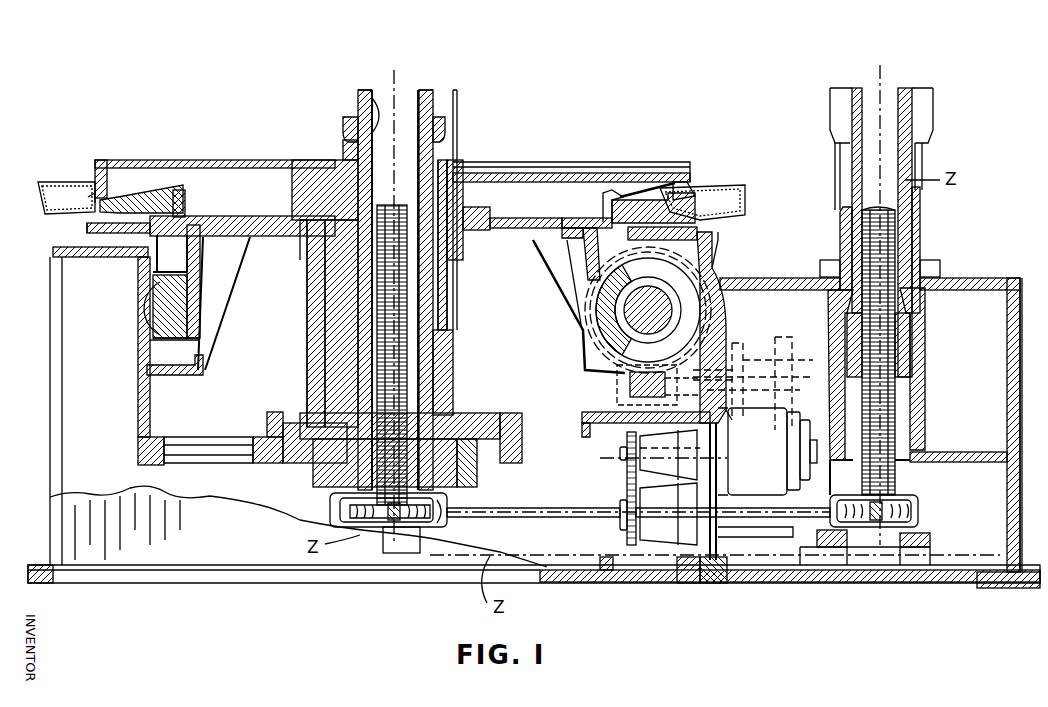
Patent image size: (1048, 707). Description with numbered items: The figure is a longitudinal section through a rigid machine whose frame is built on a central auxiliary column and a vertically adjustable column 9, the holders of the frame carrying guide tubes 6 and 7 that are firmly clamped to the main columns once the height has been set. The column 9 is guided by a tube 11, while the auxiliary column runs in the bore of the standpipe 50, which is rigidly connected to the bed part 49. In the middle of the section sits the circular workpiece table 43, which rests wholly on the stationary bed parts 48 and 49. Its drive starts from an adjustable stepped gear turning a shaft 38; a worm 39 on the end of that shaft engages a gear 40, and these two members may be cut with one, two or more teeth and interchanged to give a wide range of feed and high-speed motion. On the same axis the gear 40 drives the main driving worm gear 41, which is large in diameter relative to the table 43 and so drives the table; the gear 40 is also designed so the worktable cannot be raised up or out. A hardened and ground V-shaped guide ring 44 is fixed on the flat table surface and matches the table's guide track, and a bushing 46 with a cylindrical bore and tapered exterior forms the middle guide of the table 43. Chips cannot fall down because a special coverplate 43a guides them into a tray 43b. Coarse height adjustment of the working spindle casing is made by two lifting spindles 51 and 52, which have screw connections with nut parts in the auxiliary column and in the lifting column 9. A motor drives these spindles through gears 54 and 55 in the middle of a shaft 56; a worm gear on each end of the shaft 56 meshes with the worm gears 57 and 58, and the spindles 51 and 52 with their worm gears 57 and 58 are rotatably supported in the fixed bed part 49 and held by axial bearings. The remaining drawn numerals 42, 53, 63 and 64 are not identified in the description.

The guide 6 is at (838, 128).
The guide 7 is at (845, 178).
The vertically adjustable column 9 is at (852, 100).
The tube 11 is at (843, 248).
The shaft 38 is at (760, 382).
The worm 39 is at (630, 385).
The gear 40 is at (722, 272).
The main driving worm gear 41 is at (672, 311).
The lever 42 is at (185, 322).
The circular workpiece table 43 is at (565, 178).
The coverplate 43a is at (700, 205).
The tray 43b is at (40, 200).
The V-shaped guide ring 44 is at (620, 210).
The bushing 46 is at (330, 300).
The bed part 48 is at (150, 437).
The bed part 49 is at (690, 580).
The standpipe 50 is at (345, 160).
The lifting spindle 51 is at (345, 410).
The lifting spindle 52 is at (867, 208).
The motor 53 is at (717, 455).
The gear 54 is at (627, 462).
The gear 55 is at (628, 540).
The shaft 56 is at (512, 508).
The worm gear 57 is at (420, 530).
The worm gear 58 is at (845, 530).
The seal ring 63 is at (348, 128).
The spindle sleeve 64 is at (358, 92).